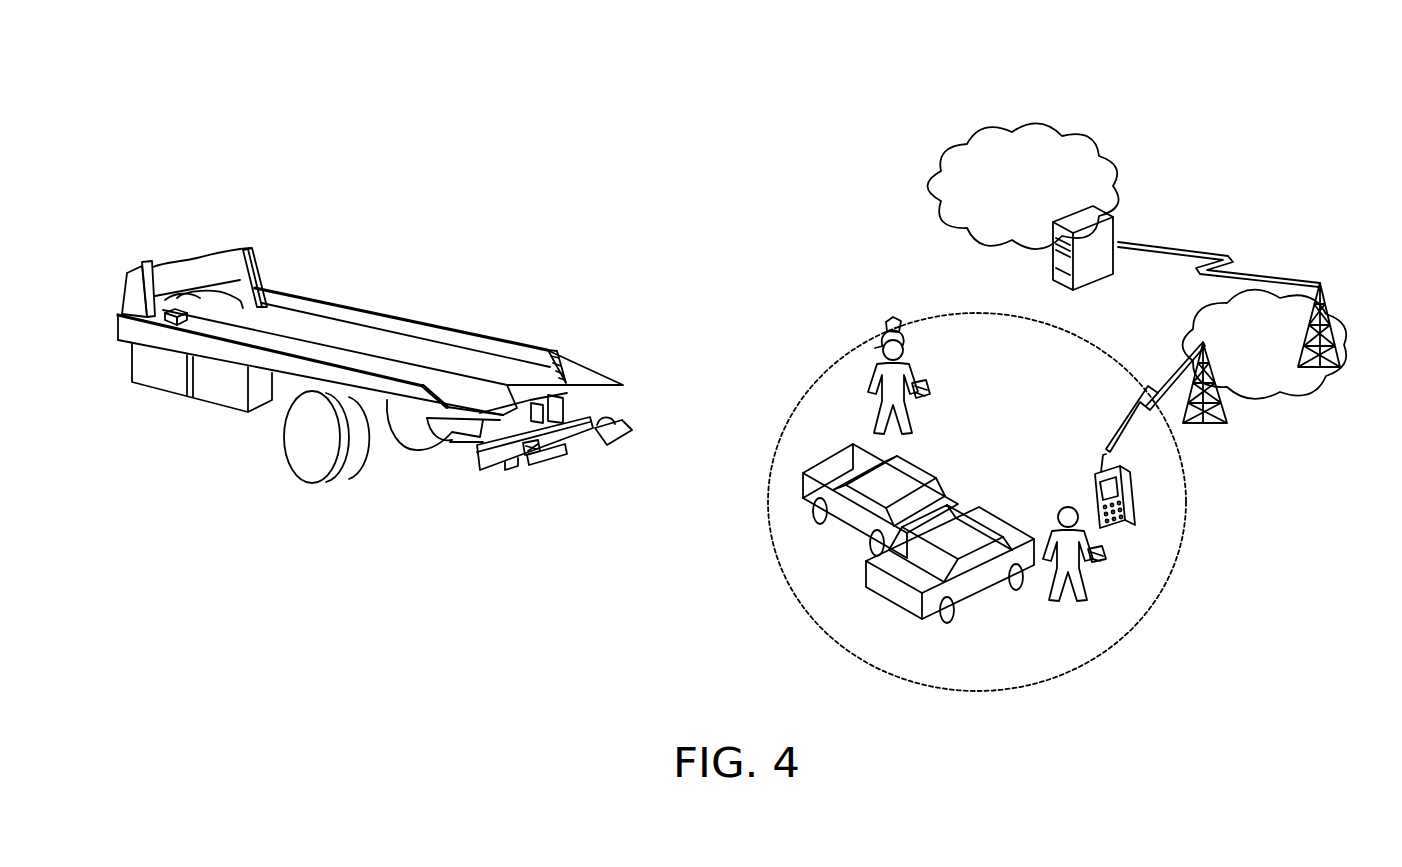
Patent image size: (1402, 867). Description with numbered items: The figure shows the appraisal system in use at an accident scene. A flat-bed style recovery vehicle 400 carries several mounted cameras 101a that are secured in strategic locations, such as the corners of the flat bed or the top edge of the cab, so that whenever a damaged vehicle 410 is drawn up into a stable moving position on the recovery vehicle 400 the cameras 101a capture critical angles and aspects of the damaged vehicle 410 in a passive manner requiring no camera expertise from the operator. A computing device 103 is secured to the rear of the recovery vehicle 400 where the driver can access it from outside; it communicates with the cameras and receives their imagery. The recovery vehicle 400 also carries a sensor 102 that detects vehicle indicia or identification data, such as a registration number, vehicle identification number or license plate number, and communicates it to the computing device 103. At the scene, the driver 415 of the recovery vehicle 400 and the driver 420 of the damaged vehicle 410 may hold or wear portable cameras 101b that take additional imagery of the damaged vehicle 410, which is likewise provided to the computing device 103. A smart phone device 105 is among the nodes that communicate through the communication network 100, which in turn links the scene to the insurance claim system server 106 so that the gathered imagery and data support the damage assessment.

The recovery vehicle 400 is at (290, 235).
The mounted camera 101a is at (548, 352).
The sensor 102 is at (620, 404).
The computing device 103 is at (168, 320).
The damaged vehicle 410 is at (932, 480).
The driver of the recovery vehicle 415 is at (870, 380).
The driver of damaged vehicle 420 is at (1095, 577).
The portable camera 101b is at (893, 323).
The smart phone device 105 is at (1133, 512).
The communication network 100 is at (1232, 332).
The insurance claim system server 106 is at (1023, 206).